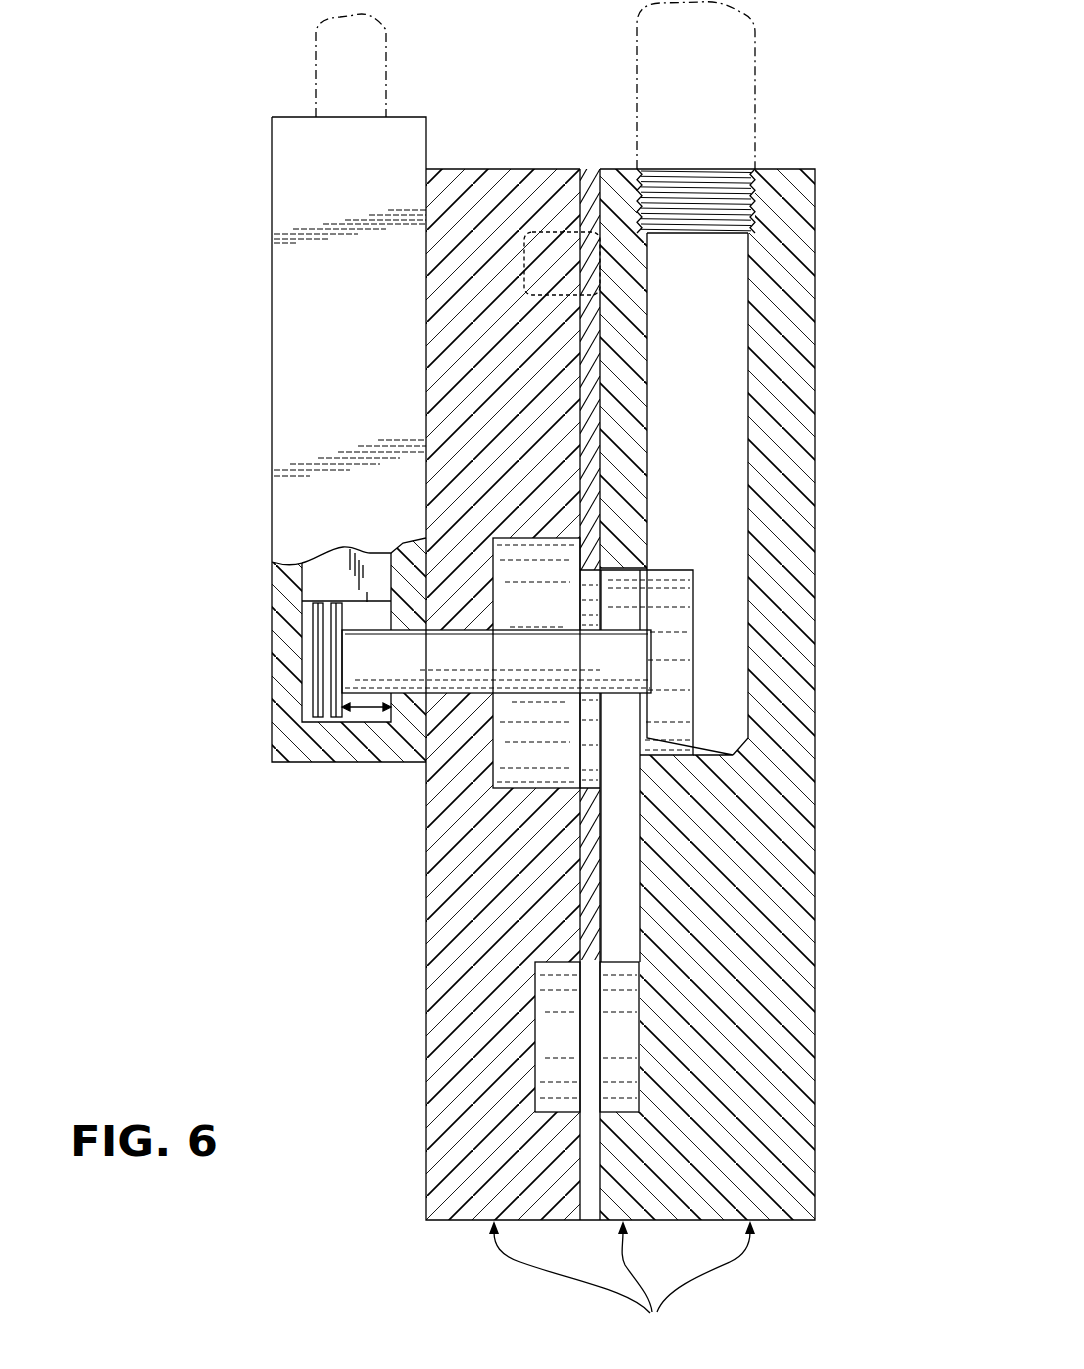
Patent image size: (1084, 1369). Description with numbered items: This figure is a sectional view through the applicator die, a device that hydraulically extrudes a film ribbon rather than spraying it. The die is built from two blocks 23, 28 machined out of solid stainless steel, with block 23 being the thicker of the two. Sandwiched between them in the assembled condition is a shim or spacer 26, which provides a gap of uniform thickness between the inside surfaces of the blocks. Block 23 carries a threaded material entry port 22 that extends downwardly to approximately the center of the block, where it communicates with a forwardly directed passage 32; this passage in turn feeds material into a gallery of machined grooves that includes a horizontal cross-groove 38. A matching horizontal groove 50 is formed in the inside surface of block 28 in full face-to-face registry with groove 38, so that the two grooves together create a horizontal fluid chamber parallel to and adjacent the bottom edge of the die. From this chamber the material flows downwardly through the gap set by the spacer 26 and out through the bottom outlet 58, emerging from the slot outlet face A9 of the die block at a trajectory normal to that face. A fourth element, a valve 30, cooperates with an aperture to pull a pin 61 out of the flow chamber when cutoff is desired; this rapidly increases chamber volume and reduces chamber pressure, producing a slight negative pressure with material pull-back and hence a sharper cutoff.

The threaded material entry port 22 is at (738, 323).
The block 23 is at (815, 978).
The shim or spacer 26 is at (590, 168).
The block 28 is at (426, 905).
The valve 30 is at (272, 722).
The forwardly directed passage 32 is at (645, 560).
The horizontal cross-groove 38 is at (630, 1048).
The horizontal groove 50 is at (535, 1040).
The bottom outlet 58 is at (587, 1185).
The pin 61 is at (537, 632).
The slot outlet face A9 is at (622, 1281).